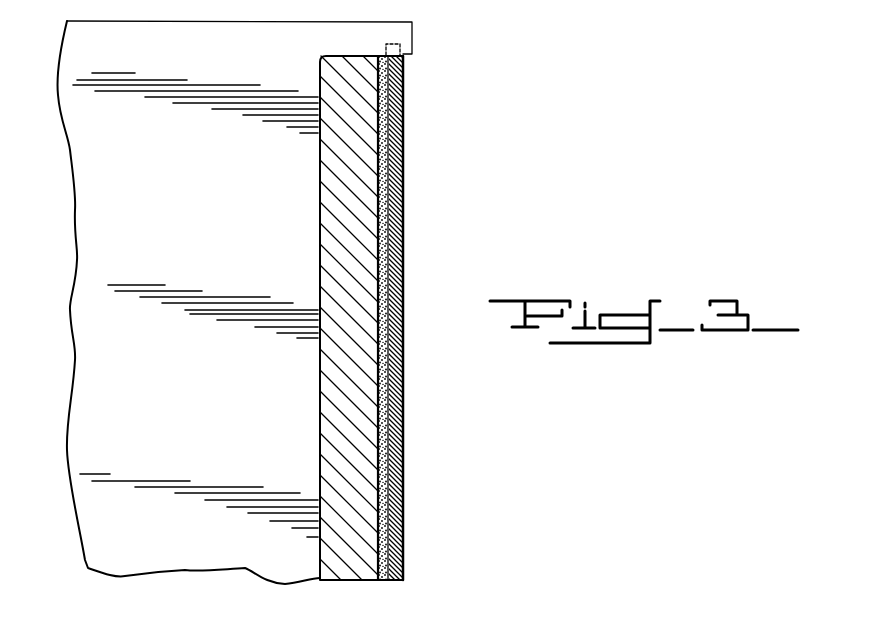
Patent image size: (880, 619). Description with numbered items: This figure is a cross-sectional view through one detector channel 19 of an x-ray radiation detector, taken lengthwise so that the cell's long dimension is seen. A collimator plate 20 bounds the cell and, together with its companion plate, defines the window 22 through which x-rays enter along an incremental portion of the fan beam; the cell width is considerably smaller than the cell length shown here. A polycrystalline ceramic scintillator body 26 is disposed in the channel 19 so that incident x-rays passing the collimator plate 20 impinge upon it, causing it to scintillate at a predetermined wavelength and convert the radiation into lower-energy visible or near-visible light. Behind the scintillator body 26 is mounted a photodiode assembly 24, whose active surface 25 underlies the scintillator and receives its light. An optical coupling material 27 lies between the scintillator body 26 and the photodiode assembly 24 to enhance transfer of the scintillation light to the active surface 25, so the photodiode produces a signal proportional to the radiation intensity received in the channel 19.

The channel 19 is at (405, 129).
The collimator plate 20 is at (182, 263).
The window 22 is at (110, 190).
The photodiode assembly 24 is at (397, 178).
The active surface 25 is at (378, 193).
The polycrystalline ceramic scintillator body 26 is at (353, 227).
The optical coupling material 27 is at (386, 265).